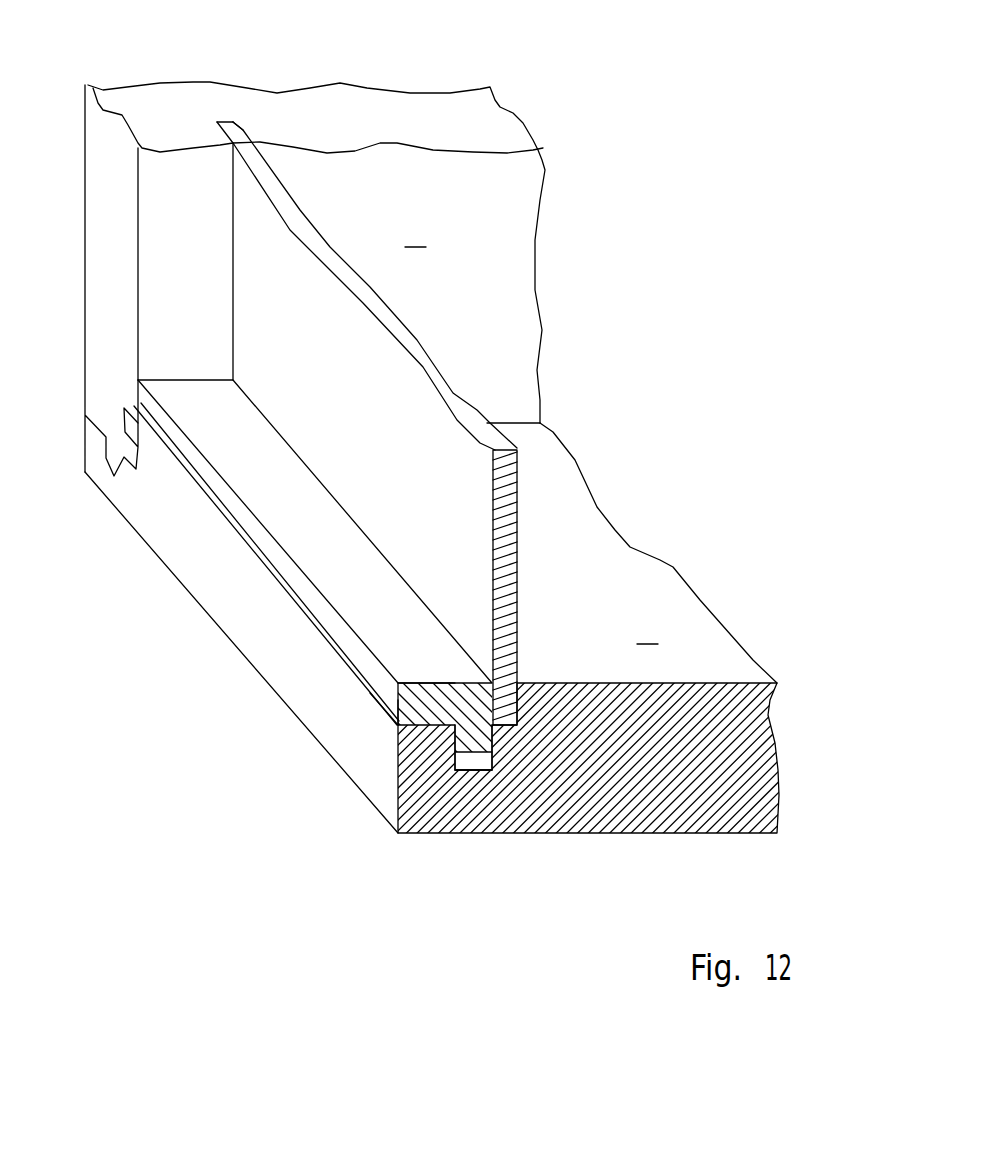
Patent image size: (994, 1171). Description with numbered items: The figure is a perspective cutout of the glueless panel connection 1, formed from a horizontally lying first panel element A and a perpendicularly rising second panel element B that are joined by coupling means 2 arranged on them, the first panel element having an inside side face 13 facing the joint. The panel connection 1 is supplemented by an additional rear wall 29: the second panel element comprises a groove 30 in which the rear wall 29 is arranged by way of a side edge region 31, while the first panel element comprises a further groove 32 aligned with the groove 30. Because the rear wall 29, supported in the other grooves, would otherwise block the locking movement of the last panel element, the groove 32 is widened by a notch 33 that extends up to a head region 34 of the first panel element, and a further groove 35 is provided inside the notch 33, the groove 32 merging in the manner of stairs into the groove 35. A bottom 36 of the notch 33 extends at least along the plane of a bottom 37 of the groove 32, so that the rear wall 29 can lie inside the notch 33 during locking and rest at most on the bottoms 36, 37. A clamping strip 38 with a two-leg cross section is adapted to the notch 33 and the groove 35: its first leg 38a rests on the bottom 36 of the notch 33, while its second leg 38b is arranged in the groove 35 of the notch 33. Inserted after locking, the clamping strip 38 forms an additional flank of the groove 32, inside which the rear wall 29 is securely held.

The panel connection 1 is at (652, 124).
The coupling means 2 is at (99, 467).
The inside side face 13 is at (517, 246).
The rear wall 29 is at (400, 328).
The groove 30 is at (222, 108).
The side edge region 31 is at (247, 121).
The further groove 32 is at (523, 672).
The notch 33 is at (365, 716).
The head region 34 is at (208, 555).
The further groove 35 is at (467, 778).
The bottom of the notch 36 is at (423, 721).
The bottom of the groove 37 is at (503, 730).
The clamping strip 38 is at (293, 480).
The first leg 38a is at (432, 697).
The second leg 38b is at (478, 752).